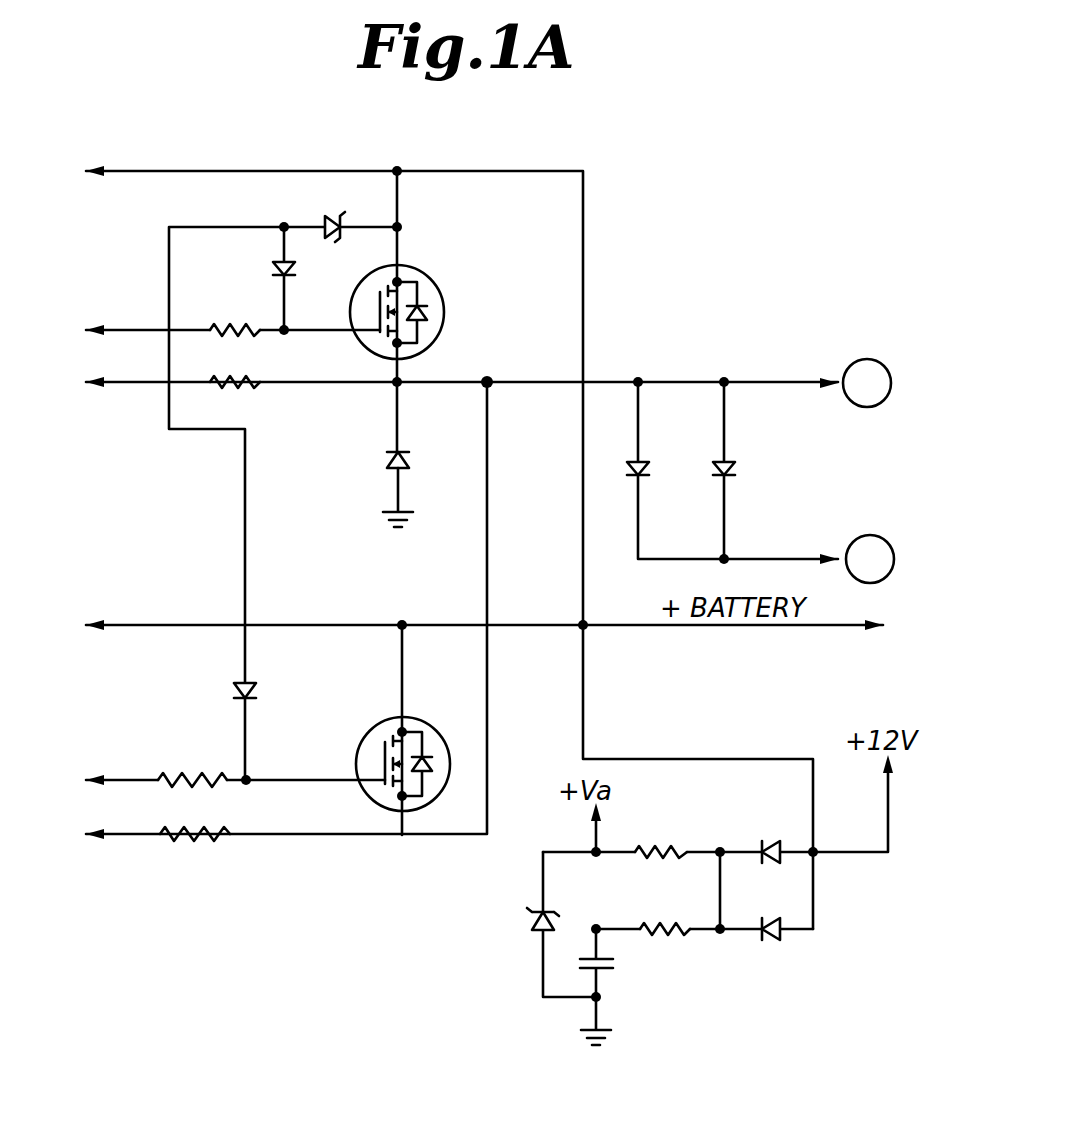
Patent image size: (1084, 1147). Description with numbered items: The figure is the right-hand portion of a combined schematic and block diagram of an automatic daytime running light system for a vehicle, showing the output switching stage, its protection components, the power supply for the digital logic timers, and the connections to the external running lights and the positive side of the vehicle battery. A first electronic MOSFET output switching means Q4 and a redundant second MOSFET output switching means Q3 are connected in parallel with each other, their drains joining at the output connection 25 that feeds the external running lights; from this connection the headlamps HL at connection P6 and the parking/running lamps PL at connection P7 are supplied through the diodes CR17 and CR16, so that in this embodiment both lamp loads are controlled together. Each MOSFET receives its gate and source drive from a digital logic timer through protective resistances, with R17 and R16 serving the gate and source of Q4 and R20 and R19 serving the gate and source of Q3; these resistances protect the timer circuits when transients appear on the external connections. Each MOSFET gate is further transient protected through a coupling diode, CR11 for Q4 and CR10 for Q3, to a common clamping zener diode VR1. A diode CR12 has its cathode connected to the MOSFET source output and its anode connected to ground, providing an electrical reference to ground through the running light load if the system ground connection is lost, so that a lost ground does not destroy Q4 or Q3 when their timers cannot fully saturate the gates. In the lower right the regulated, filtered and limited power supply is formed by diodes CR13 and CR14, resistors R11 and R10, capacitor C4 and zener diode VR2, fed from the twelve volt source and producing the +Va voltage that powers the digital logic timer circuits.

The clamping zener diode VR1 is at (337, 200).
The coupling diode CR11 is at (266, 268).
The protective resistance R17 is at (244, 322).
The protective resistance R16 is at (252, 376).
The first electronic MOSFET output switching means Q4 is at (432, 282).
The output connection 25 is at (490, 378).
The diode CR12 is at (382, 463).
The diode CR17 is at (642, 459).
The diode CR16 is at (740, 455).
The headlamp connection P6 is at (890, 383).
The parking/running lamp connection P7 is at (894, 559).
The coupling diode CR10 is at (255, 686).
The second MOSFET output switching means Q3 is at (464, 698).
The protective resistance R20 is at (195, 742).
The protective resistance R19 is at (178, 838).
The resistor R11 is at (674, 826).
The diode CR13 is at (768, 834).
The resistor R10 is at (678, 921).
The diode CR14 is at (782, 934).
The zener diode VR2 is at (533, 924).
The capacitor C4 is at (614, 965).